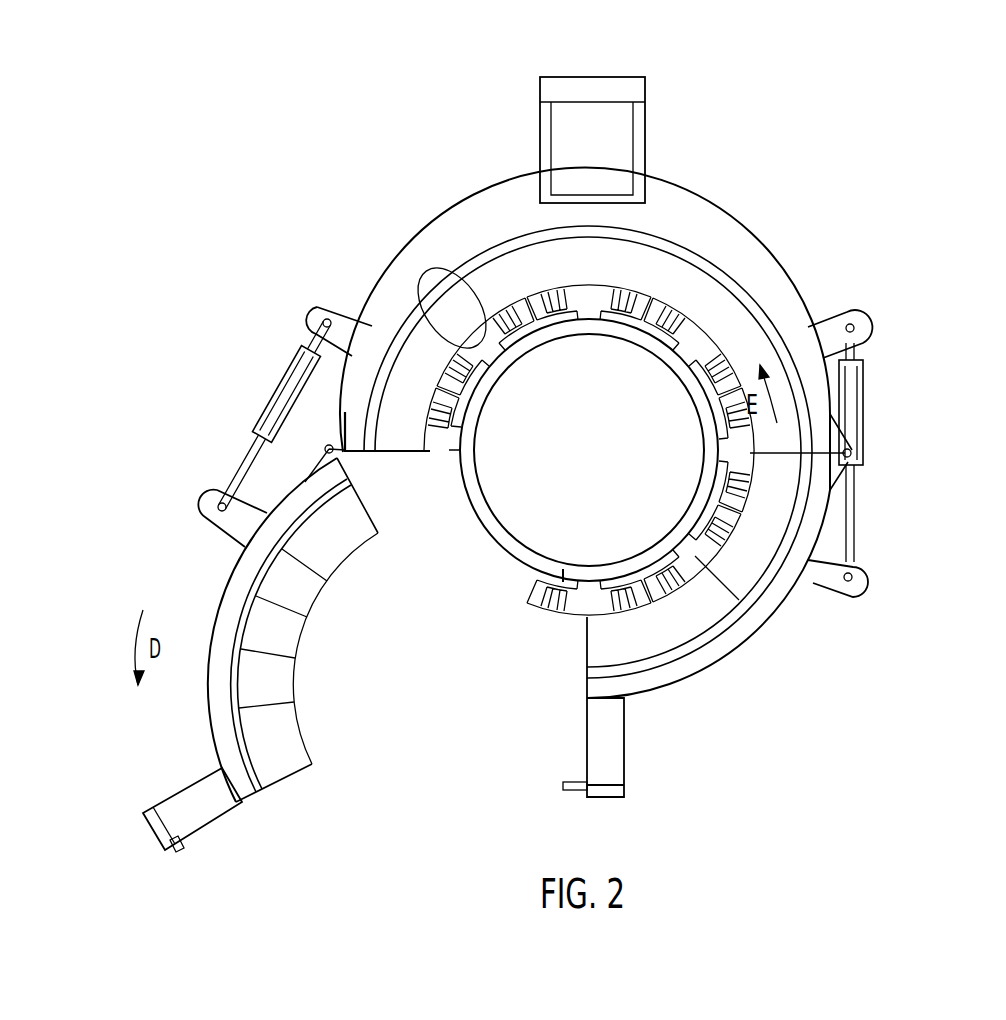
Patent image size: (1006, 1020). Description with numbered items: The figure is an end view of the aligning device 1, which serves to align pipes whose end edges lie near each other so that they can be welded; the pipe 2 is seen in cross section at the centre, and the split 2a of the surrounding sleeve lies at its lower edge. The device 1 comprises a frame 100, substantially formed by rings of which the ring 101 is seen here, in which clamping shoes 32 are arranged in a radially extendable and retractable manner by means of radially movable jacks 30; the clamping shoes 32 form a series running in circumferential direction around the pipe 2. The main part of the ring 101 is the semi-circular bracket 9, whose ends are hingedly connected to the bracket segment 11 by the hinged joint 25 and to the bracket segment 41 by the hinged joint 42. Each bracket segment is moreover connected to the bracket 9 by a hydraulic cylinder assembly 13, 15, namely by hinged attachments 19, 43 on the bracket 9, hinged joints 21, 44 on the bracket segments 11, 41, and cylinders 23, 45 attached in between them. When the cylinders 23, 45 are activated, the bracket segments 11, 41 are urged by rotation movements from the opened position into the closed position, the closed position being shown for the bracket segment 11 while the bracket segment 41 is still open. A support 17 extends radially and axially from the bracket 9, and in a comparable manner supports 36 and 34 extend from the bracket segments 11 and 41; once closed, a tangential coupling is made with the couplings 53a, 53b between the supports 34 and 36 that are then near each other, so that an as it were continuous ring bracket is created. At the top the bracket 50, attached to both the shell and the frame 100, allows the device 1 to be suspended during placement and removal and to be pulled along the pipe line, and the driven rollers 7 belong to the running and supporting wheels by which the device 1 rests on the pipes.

The aligning device 1 is at (793, 270).
The pipe 2 is at (571, 581).
The sleeve split 2a is at (517, 562).
The rollers 7 is at (593, 290).
The semi-circular bracket 9 is at (702, 287).
The bracket segment 11 is at (753, 620).
The hydraulic cylinder assembly 13 is at (282, 362).
The hydraulic cylinder assembly 15 is at (877, 406).
The support 17 is at (632, 155).
The hinged attachment 19 is at (852, 326).
The hinged joint 21 is at (857, 583).
The cylinder 23 is at (852, 412).
The hinged joint 25 is at (853, 458).
The radially movable jack 30 is at (450, 347).
The clamping shoes 32 is at (523, 297).
The support 34 is at (186, 803).
The support 36 is at (610, 760).
The bracket segment 41 is at (218, 697).
The hinged joint 42 is at (326, 450).
The hinged attachment 43 is at (326, 318).
The hinged joint 44 is at (222, 508).
The cylinder 45 is at (267, 408).
The bracket 50 is at (592, 90).
The coupling 53a is at (180, 846).
The coupling 53b is at (571, 787).
The frame 100 is at (737, 150).
The ring 101 is at (507, 137).